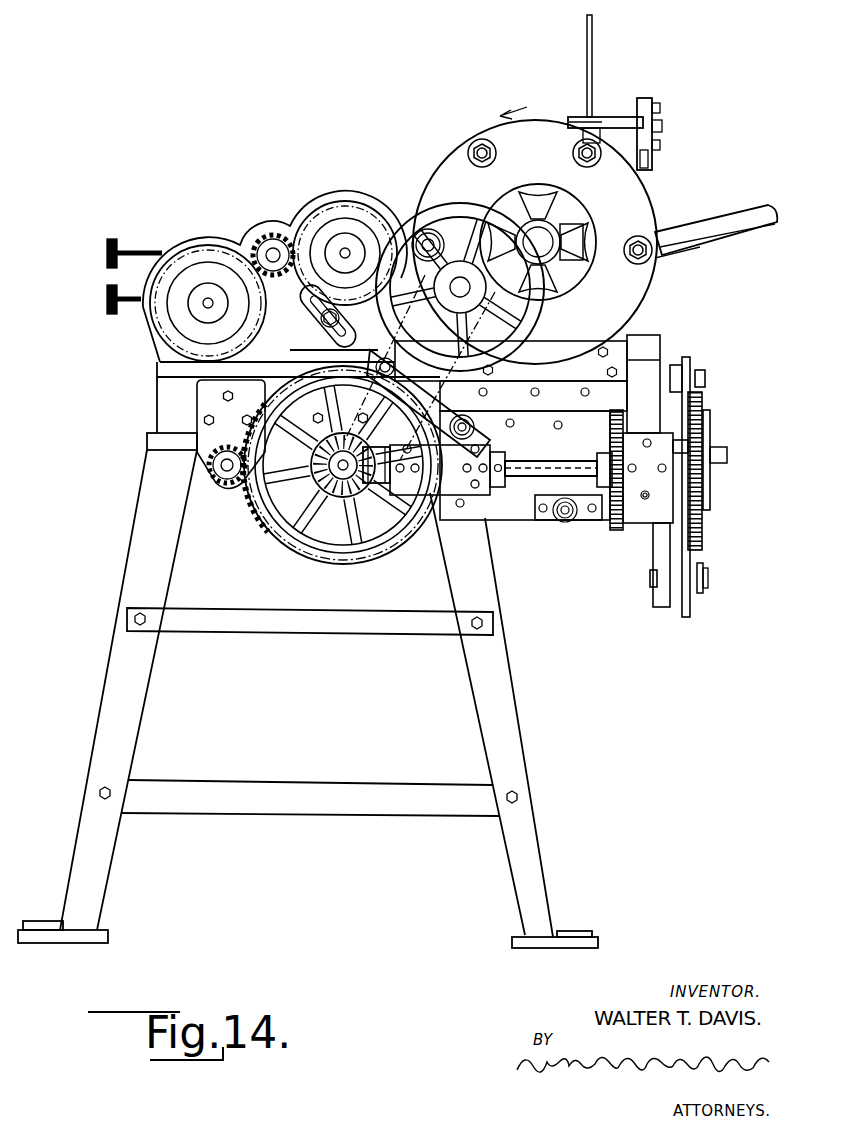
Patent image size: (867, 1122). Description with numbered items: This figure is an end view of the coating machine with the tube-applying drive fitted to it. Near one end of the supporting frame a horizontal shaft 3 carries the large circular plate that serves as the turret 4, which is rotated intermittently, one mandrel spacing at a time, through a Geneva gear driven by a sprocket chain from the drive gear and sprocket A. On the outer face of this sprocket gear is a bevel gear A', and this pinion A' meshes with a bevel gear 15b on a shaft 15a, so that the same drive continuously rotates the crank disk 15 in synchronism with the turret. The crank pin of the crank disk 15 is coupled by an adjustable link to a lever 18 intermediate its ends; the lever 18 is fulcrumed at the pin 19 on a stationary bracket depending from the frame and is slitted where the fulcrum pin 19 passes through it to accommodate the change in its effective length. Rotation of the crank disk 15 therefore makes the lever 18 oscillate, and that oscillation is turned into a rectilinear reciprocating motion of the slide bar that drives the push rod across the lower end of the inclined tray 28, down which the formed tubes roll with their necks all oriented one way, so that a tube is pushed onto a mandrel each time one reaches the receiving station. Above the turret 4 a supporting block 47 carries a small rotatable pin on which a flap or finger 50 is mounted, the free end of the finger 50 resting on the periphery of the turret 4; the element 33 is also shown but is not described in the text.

The rod 33 is at (591, 43).
The flap or finger 50 is at (580, 113).
The supporting block 47 is at (648, 98).
The horizontal shaft 3 is at (540, 236).
The inclined tray 28 is at (710, 220).
The turret 4 is at (650, 304).
The bevel gear A' is at (242, 472).
The drive gear and sprocket A is at (342, 480).
The bevel gear 15b is at (372, 495).
The shaft 15a is at (527, 482).
The crank disk 15 is at (703, 534).
The fulcrum pin 19 is at (705, 578).
The lever 18 is at (678, 623).